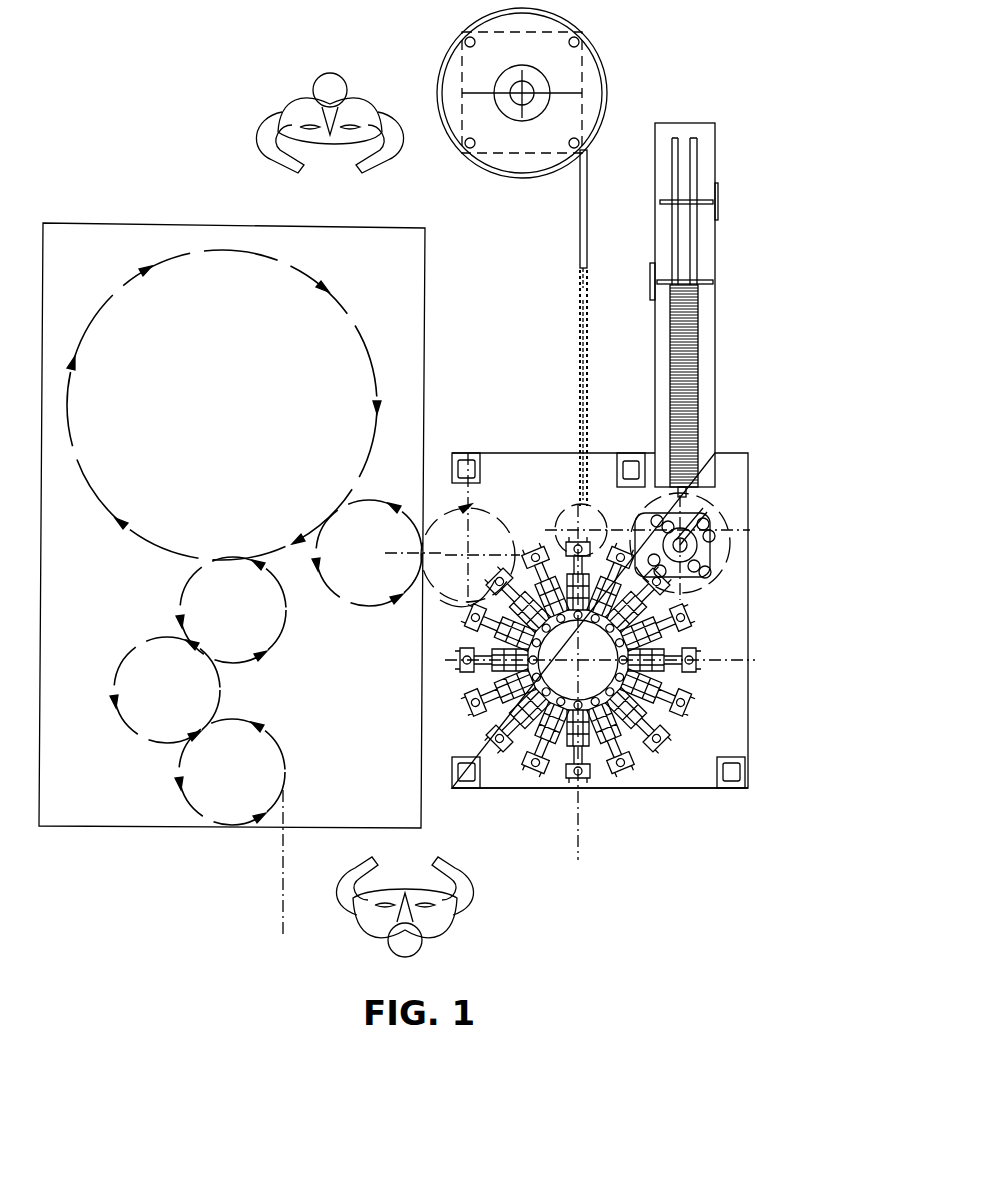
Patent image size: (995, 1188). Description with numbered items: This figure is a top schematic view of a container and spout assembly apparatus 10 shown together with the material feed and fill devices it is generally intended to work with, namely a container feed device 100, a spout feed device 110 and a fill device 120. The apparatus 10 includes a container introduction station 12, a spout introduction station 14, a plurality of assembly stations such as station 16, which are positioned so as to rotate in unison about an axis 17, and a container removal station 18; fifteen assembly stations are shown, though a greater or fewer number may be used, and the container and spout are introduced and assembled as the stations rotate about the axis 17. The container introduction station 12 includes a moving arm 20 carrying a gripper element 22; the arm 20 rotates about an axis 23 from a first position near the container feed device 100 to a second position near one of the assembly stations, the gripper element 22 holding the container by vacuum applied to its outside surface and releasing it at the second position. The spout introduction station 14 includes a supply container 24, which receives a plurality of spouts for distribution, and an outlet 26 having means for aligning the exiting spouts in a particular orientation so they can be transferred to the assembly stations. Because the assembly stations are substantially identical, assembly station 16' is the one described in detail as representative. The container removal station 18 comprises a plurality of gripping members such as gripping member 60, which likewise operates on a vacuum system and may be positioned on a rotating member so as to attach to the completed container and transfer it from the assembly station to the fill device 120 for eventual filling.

The container and spout assembly apparatus 10 is at (546, 797).
The container introduction station 12 is at (714, 494).
The spout introduction station 14 is at (573, 438).
The assembly station 16 is at (701, 637).
The assembly station 16' is at (704, 707).
The axis 17 is at (588, 670).
The container removal station 18 is at (488, 497).
The moving arm 20 is at (700, 545).
The gripper element 22 is at (702, 520).
The axis 23 is at (716, 560).
The supply container 24 is at (574, 324).
The outlet 26 is at (588, 498).
The gripping member 60 is at (484, 573).
The container feed device 100 is at (686, 120).
The spout feed device 110 is at (598, 45).
The fill device 120 is at (434, 400).